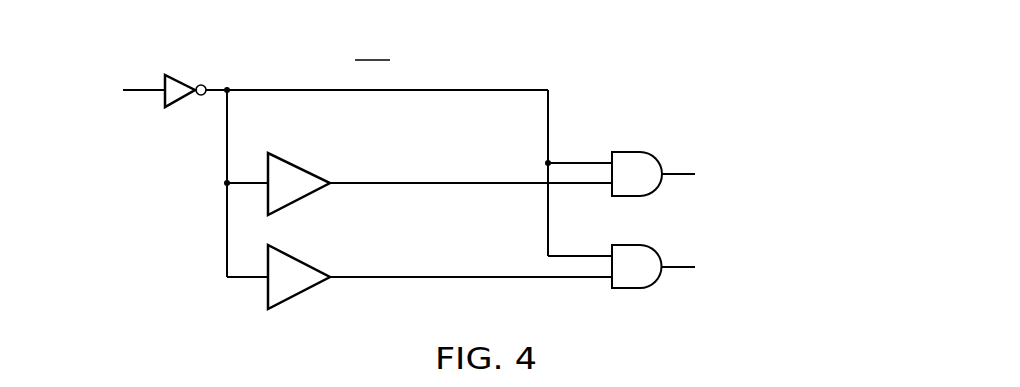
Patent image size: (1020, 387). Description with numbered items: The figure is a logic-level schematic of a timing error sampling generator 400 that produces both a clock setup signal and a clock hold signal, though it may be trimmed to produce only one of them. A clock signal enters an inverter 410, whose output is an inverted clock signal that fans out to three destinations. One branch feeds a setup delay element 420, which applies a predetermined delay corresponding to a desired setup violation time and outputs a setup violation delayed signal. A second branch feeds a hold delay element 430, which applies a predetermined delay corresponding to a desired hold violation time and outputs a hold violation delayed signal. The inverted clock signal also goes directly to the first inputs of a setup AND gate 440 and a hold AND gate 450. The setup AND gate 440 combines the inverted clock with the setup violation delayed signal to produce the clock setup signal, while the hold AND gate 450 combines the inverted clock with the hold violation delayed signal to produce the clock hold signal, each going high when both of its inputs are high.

The timing error sampling generator 400 is at (683, 58).
The inverter 410 is at (193, 76).
The setup delay element 420 is at (303, 166).
The hold delay element 430 is at (300, 295).
The setup AND gate 440 is at (632, 152).
The hold AND gate 450 is at (632, 288).